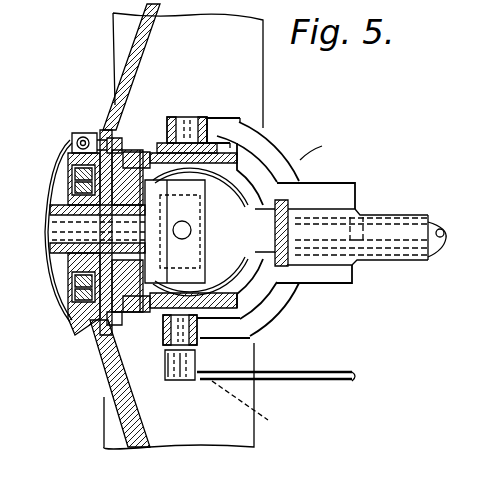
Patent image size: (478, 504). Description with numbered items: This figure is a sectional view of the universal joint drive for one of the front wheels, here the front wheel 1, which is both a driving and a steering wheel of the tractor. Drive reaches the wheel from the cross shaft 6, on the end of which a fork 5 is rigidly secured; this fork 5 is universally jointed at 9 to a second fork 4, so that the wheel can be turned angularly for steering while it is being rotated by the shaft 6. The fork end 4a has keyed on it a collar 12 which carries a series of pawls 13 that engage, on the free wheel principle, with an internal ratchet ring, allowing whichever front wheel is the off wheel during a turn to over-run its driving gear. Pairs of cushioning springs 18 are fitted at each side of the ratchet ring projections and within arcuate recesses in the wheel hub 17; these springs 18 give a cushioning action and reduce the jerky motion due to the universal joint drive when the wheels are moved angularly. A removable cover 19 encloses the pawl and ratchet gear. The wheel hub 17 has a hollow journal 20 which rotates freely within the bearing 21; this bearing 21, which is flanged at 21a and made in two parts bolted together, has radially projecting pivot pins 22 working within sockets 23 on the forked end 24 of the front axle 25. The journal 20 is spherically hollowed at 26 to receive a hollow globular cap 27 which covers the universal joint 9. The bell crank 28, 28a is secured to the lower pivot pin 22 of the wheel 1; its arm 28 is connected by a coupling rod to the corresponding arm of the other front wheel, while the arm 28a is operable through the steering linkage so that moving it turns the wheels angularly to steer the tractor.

The front wheel 1 is at (183, 231).
The fork 4 is at (143, 310).
The fork end 4a is at (55, 157).
The fork 5 is at (290, 180).
The cross shaft 6 is at (433, 250).
The universal joint 9 is at (238, 260).
The collar 12 is at (72, 318).
The pawls 13 is at (92, 340).
The wheel hub 17 is at (126, 115).
The cushioning springs 18 is at (80, 133).
The removable cover 19 is at (60, 285).
The hollow journal 20 is at (260, 157).
The bearing 21 is at (162, 140).
The flange 21a is at (100, 135).
The pivot pins 22 is at (196, 117).
The sockets 23 is at (207, 123).
The forked end 24 is at (250, 132).
The front axle 25 is at (357, 218).
The spherical hollow 26 is at (132, 148).
The hollow globular cap 27 is at (306, 152).
The bell crank arm 28 is at (274, 407).
The bell crank arm 28a is at (306, 383).